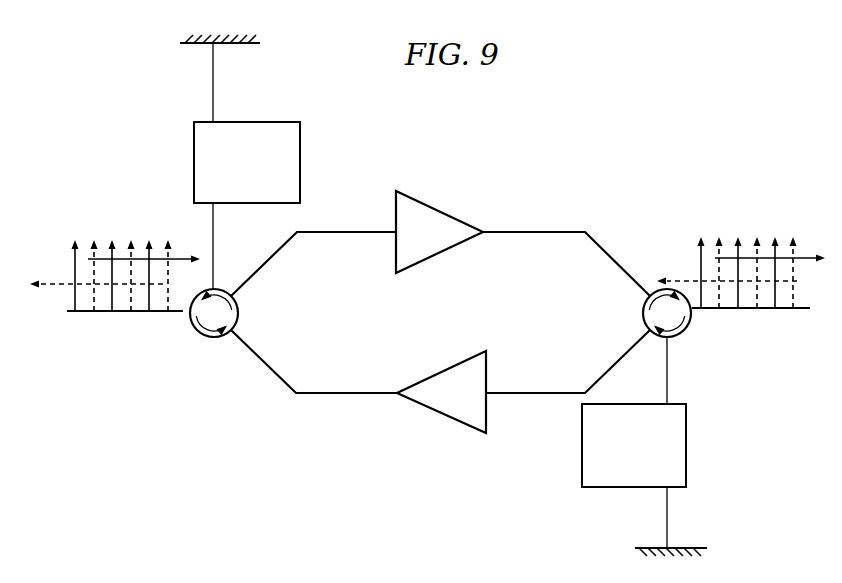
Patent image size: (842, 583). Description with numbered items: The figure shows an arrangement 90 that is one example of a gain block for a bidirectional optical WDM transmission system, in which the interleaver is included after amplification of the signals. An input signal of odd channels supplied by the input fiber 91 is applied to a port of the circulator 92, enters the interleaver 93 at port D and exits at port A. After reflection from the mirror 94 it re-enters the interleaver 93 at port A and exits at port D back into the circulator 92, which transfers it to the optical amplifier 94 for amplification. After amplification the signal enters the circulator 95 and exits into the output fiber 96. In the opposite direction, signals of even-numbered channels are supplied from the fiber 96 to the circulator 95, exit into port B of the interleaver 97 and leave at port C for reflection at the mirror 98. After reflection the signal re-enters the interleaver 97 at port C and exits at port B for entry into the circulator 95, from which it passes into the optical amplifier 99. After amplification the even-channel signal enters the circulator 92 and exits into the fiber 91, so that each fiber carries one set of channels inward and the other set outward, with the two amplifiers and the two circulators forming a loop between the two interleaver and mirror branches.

The arrangement 90 is at (488, 106).
The input fiber 91 is at (120, 311).
The circulator 92 is at (240, 318).
The interleaver 93 is at (300, 160).
The mirror / optical amplifier 94 is at (237, 43).
The circulator 95 is at (646, 308).
The output fiber 96 is at (745, 309).
The interleaver 97 is at (686, 446).
The mirror 98 is at (686, 548).
The optical amplifier 99 is at (437, 415).